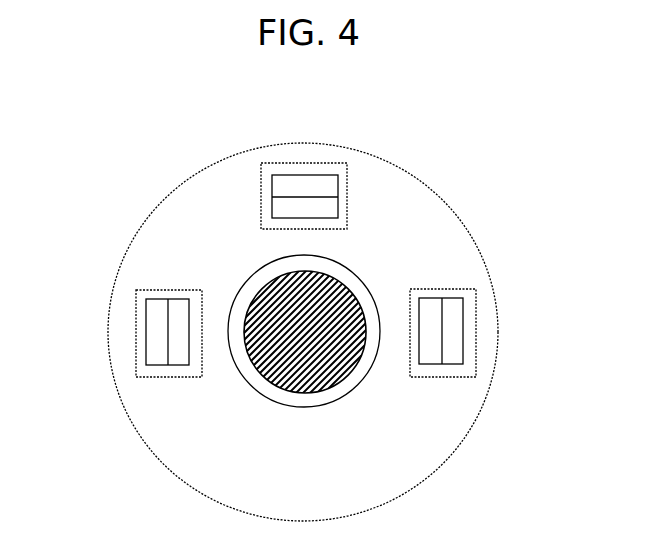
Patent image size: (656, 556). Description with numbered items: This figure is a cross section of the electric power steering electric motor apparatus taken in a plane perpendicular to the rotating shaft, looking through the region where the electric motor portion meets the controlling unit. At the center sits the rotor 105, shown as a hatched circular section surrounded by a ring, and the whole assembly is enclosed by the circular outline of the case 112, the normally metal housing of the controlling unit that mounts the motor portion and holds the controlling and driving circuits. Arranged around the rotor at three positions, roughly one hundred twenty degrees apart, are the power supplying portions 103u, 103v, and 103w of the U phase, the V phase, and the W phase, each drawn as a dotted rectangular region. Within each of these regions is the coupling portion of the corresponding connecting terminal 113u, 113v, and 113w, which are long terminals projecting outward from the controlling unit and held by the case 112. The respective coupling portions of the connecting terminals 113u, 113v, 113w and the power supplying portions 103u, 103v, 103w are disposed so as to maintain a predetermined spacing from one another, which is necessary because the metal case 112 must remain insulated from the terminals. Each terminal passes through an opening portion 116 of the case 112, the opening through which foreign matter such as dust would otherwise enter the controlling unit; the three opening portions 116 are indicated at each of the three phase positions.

The rotor 105 is at (353, 373).
The case 112 is at (470, 432).
The U-phase power supplying portion 103u is at (138, 290).
The V-phase power supplying portion 103v is at (345, 175).
The W-phase power supplying portion 103w is at (453, 295).
The U-phase connecting terminal 113u is at (185, 299).
The V-phase connecting terminal 113v is at (272, 198).
The W-phase connecting terminal 113w is at (430, 298).
The opening portion 116 is at (347, 193).